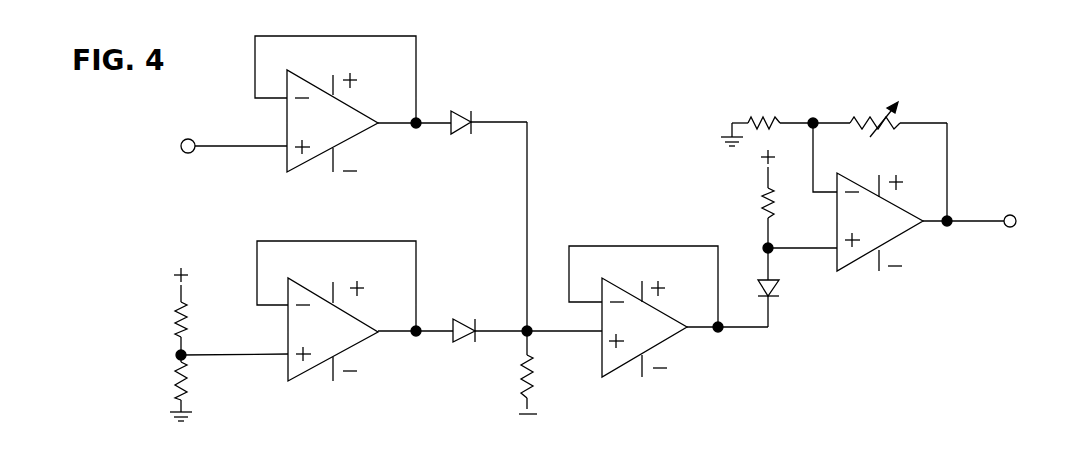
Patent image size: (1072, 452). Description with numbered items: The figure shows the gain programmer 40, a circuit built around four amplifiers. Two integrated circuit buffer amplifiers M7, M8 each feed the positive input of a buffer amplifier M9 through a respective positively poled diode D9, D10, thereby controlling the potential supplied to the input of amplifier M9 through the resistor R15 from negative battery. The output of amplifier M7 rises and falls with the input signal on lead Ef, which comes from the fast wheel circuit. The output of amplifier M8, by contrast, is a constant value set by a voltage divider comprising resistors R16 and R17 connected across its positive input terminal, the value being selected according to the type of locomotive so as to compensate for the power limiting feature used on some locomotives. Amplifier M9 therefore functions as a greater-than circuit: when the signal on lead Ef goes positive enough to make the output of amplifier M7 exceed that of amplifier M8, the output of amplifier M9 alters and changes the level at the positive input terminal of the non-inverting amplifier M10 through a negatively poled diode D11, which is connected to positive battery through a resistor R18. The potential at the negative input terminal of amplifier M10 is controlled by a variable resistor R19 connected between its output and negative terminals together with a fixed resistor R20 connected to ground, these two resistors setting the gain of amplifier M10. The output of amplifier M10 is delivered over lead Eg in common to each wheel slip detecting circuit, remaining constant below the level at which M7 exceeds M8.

The gain programmer 40 is at (720, 50).
The integrated circuit buffer amplifier M7 is at (353, 104).
The integrated circuit buffer amplifier M8 is at (355, 311).
The buffer amplifier M9 is at (668, 311).
The non-inverting amplifier M10 is at (908, 197).
The positively poled diode D9 is at (473, 93).
The positively poled diode D10 is at (478, 293).
The negatively poled diode D11 is at (781, 290).
The resistor R15 is at (522, 368).
The resistor R16 is at (176, 319).
The resistor R17 is at (176, 387).
The resistor R18 is at (763, 204).
The variable resistor R19 is at (868, 115).
The fixed resistor R20 is at (770, 118).
The lead Ef is at (230, 146).
The lead Eg is at (981, 222).